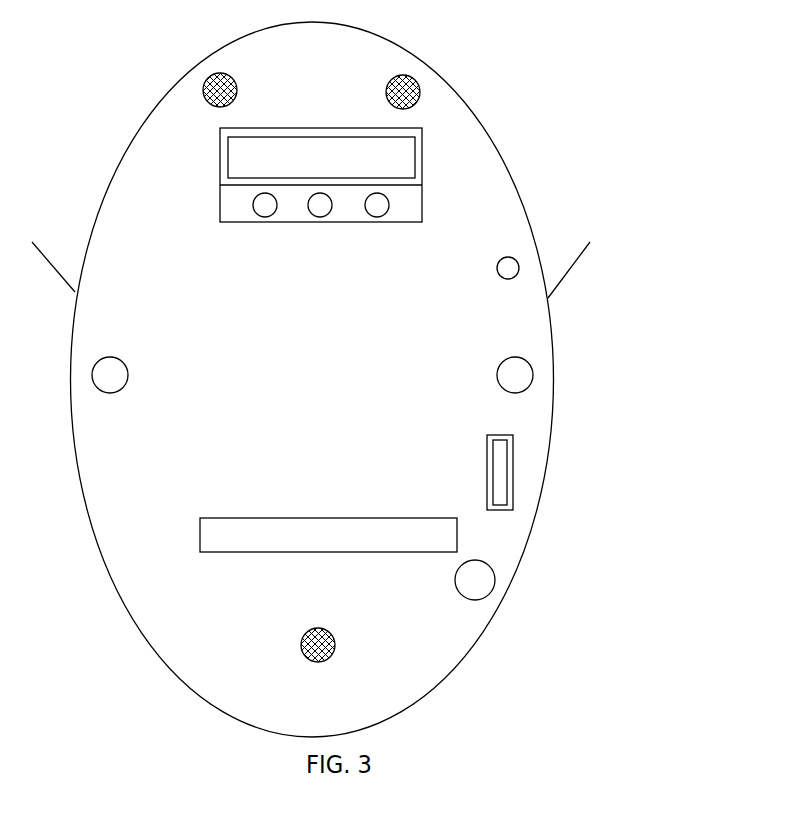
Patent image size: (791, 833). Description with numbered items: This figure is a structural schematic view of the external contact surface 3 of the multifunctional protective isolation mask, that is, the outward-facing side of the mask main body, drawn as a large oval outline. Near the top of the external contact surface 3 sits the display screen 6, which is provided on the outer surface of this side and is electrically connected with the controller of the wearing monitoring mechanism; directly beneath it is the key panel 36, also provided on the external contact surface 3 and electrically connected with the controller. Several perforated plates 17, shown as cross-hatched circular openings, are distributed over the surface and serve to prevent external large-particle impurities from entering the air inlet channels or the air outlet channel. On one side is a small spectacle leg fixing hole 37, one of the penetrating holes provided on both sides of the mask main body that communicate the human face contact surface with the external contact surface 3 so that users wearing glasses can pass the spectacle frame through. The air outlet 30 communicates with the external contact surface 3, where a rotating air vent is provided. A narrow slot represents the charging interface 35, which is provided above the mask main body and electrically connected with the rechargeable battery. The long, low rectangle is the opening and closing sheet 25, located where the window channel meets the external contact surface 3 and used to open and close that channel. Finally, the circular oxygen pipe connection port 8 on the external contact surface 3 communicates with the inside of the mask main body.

The external contact surface 3 is at (440, 253).
The perforated plate 17 is at (222, 90).
The display screen 6 is at (345, 155).
The key panel 36 is at (377, 205).
The spectacle leg fixing hole 37 is at (510, 268).
The air outlet 30 is at (517, 373).
The charging interface 35 is at (500, 470).
The opening and closing sheet 25 is at (383, 533).
The oxygen pipe connection port 8 is at (475, 580).